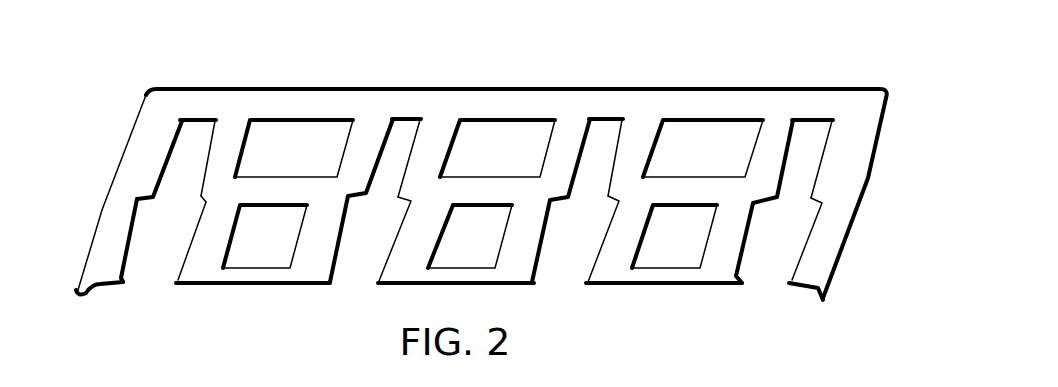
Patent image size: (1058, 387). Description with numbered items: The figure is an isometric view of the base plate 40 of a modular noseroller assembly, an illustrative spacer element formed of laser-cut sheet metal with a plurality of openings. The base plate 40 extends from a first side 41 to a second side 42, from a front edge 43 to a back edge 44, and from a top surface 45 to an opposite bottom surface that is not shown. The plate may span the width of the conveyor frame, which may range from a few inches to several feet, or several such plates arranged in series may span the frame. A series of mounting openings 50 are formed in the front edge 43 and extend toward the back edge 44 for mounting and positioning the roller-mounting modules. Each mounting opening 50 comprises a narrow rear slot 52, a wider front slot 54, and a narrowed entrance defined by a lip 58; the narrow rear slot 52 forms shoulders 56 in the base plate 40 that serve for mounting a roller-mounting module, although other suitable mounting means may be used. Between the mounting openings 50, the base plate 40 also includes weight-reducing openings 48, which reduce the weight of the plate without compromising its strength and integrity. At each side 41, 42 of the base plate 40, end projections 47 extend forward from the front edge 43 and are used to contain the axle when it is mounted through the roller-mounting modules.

The base plate 40 is at (543, 62).
The first side 41 is at (117, 140).
The second side 42 is at (878, 148).
The front edge 43 is at (653, 285).
The back edge 44 is at (420, 87).
The top surface 45 is at (224, 98).
The end projections 47 is at (76, 298).
The weight-reducing openings 48 is at (277, 164).
The mounting openings 50 is at (153, 263).
The narrow rear slot 52 is at (199, 197).
The wider front slot 54 is at (150, 240).
The shoulders 56 is at (153, 196).
The lip 58 is at (123, 285).